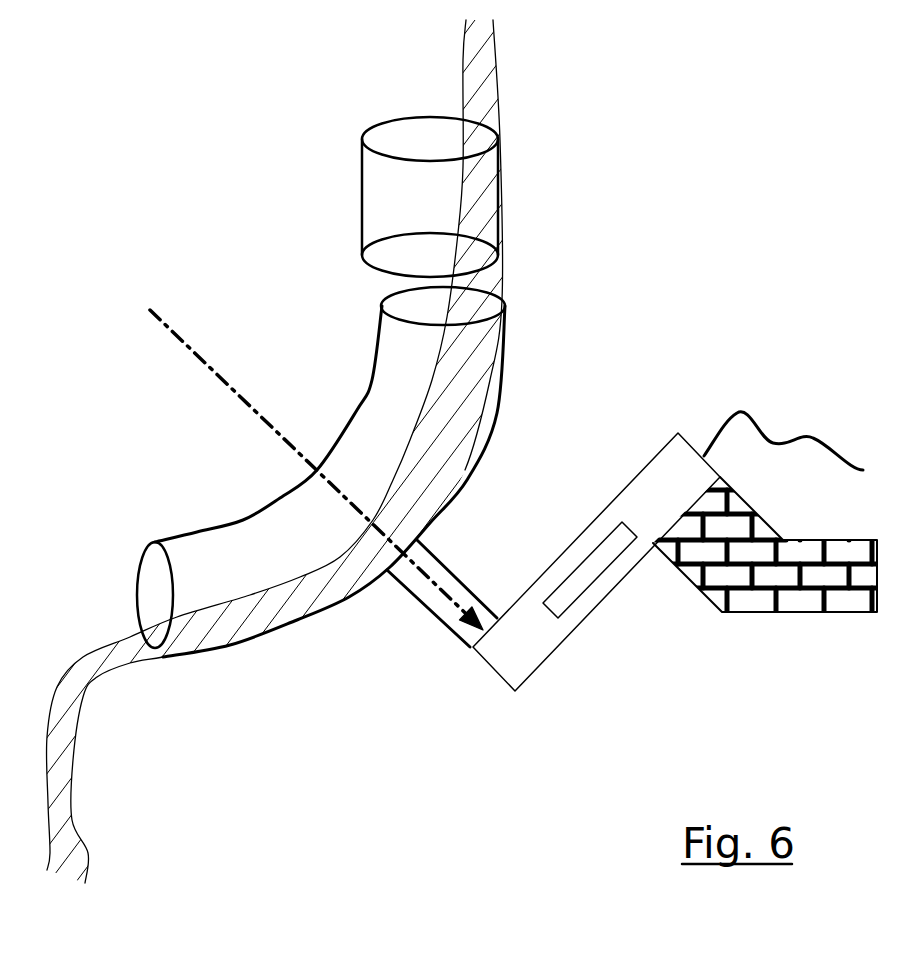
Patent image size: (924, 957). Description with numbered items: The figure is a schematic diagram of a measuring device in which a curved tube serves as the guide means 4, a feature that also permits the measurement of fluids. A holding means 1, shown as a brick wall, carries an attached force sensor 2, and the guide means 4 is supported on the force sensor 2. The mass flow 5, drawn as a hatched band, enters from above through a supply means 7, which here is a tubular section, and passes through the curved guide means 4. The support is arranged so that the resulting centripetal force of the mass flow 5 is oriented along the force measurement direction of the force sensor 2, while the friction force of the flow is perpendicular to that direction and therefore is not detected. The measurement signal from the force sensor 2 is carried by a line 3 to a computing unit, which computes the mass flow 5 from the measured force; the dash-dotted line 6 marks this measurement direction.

The holding means 1 is at (768, 567).
The force sensor 2 is at (553, 562).
The line 3 is at (783, 430).
The guide means 4 is at (321, 485).
The mass flow 5 is at (275, 445).
The measuring axis 6 is at (316, 470).
The supply means 7 is at (410, 197).